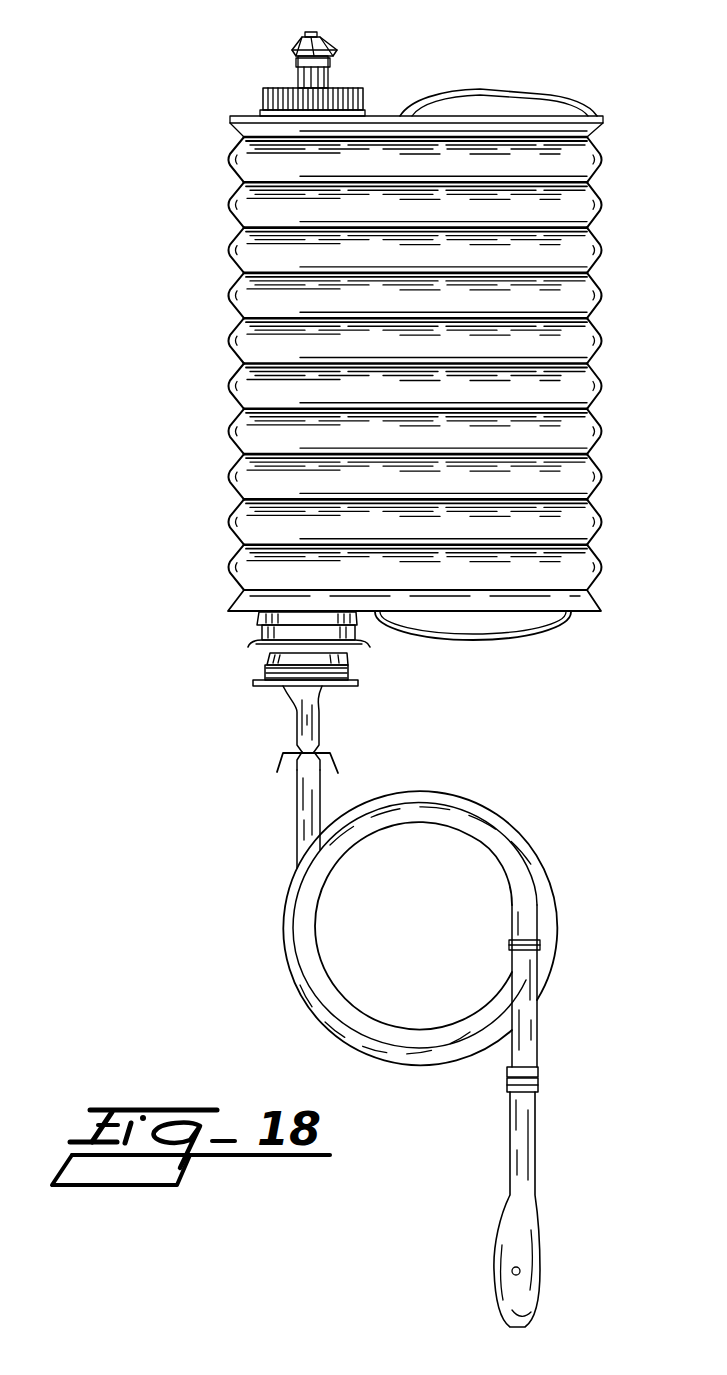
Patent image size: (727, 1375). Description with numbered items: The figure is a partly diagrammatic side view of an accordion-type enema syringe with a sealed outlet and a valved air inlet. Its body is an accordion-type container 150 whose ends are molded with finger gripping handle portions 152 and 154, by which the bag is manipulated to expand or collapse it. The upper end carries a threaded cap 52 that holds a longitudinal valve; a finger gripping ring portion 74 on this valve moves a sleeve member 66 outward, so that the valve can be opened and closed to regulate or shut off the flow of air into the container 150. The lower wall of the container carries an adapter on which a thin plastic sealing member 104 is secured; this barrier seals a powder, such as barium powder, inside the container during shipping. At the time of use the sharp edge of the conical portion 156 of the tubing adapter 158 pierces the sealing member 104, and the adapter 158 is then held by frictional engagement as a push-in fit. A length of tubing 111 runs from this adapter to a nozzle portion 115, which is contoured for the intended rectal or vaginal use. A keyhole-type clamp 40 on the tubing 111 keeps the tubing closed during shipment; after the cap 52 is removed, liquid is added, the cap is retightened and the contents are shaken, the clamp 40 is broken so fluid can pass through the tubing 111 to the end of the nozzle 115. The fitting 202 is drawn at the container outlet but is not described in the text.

The accordion-type container 150 is at (236, 328).
The finger gripping ring portion 74 is at (295, 47).
The sleeve member 66 is at (298, 78).
The threaded cap 52 is at (358, 90).
The finger gripping handle portion 152 is at (557, 95).
The finger gripping handle portion 154 is at (520, 640).
The outlet fitting 202 is at (260, 623).
The sealing member 104 is at (266, 652).
The conical portion 156 is at (350, 657).
The tubing adapter 158 is at (295, 698).
The keyhole-type clamp 40 is at (280, 762).
The tubing 111 is at (298, 803).
The nozzle portion 115 is at (540, 1233).